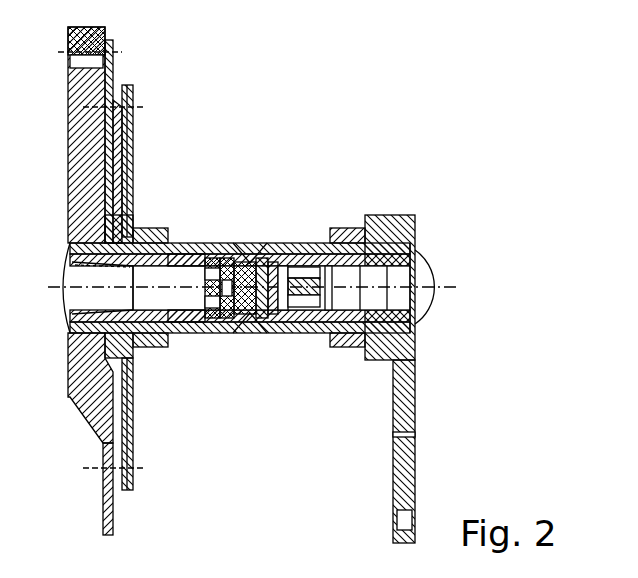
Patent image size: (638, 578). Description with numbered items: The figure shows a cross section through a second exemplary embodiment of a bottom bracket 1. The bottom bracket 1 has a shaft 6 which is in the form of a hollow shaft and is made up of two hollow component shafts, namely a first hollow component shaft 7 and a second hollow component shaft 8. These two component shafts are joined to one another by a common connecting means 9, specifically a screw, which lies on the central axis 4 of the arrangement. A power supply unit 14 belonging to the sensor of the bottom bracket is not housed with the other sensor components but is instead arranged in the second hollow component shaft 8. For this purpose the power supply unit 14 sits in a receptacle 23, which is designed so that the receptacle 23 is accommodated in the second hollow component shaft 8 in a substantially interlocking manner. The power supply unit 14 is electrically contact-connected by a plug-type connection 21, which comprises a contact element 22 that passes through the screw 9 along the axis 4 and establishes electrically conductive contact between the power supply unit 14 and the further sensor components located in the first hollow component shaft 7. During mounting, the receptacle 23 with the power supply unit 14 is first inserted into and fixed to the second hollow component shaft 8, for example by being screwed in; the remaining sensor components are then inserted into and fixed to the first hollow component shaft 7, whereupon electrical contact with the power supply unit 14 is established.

The bottom bracket 1 is at (252, 215).
The axis 4 is at (63, 284).
The power supply unit 14 is at (88, 302).
The first hollow component shaft 7 is at (203, 244).
The second hollow component shaft 8 is at (266, 244).
The shaft 6 is at (207, 333).
The plug-type connection 21 is at (225, 333).
The connecting means 9 is at (246, 332).
The contact element 22 is at (268, 333).
The receptacle 23 is at (178, 313).